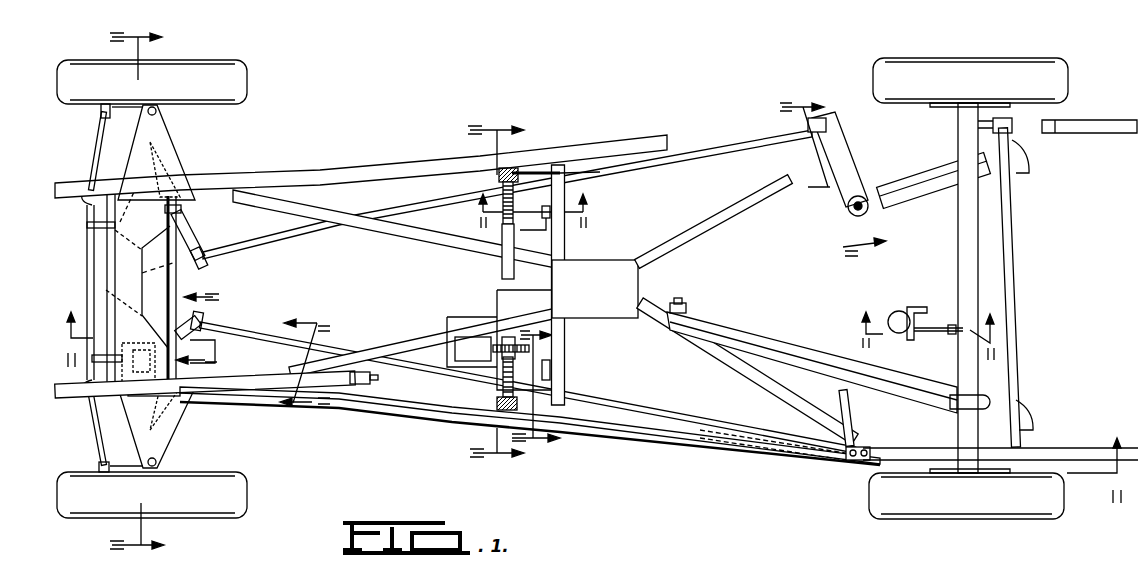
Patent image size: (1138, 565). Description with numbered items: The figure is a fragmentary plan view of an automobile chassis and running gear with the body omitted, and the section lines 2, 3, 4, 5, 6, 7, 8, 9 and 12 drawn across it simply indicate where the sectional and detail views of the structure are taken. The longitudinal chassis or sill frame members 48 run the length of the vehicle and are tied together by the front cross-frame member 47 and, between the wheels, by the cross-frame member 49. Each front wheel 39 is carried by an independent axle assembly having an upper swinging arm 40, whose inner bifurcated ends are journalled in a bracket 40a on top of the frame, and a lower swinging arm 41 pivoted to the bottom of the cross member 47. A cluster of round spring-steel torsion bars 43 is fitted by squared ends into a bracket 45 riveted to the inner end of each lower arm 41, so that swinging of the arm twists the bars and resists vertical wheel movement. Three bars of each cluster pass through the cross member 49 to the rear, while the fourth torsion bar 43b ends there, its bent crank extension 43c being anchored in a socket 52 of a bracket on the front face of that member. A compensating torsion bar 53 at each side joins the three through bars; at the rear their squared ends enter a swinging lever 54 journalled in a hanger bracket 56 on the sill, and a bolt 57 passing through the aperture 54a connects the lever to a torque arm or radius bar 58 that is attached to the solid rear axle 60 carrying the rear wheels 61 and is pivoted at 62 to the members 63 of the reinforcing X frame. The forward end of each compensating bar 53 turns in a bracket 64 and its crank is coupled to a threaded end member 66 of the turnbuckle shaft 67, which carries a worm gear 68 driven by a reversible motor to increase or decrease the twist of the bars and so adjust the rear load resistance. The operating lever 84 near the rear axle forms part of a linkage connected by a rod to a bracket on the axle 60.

The section line 2- 2 is at (592, 397).
The section line 3- 3 is at (197, 319).
The section line 4- 4 is at (542, 374).
The section line 5- 5 is at (833, 178).
The section line 6- 6 is at (305, 364).
The section line 7- 7 is at (535, 213).
The section line 8- 8 is at (144, 295).
The section line 9- 9 is at (501, 284).
The section line 12- 12 is at (1016, 320).
The front wheel 39 is at (240, 82).
The upper swinging arm 40 is at (177, 163).
The bracket 40a is at (183, 403).
The lower swinging arm 41 is at (138, 154).
The torsion bars 43 is at (256, 252).
The fourth torsion bar 43b is at (264, 327).
The crank extension 43c is at (560, 383).
The bracket 45 is at (187, 247).
The front cross-frame member 47 is at (177, 215).
The longitudinal chassis or sill frame members 48 is at (348, 174).
The cross-frame member 49 is at (565, 338).
The socket 52 is at (530, 220).
The compensating torsion bar 53 is at (526, 158).
The swinging lever 54 is at (862, 153).
The aperture 54a is at (848, 216).
The hanger bracket 56 is at (854, 460).
The bolt 57 is at (874, 214).
The torque arm or radius bar 58 is at (774, 328).
The rear axle 60 is at (958, 244).
The rear wheels 61 is at (1057, 72).
The pivotal connection 62 is at (682, 302).
The members of the reinforcing X frame 63 is at (688, 234).
The socket or bracket 64 is at (509, 168).
The threaded end member 66 is at (502, 183).
The turnbuckle shaft 67 is at (520, 288).
The worm gear 68 is at (492, 349).
The operating lever 84 is at (930, 323).